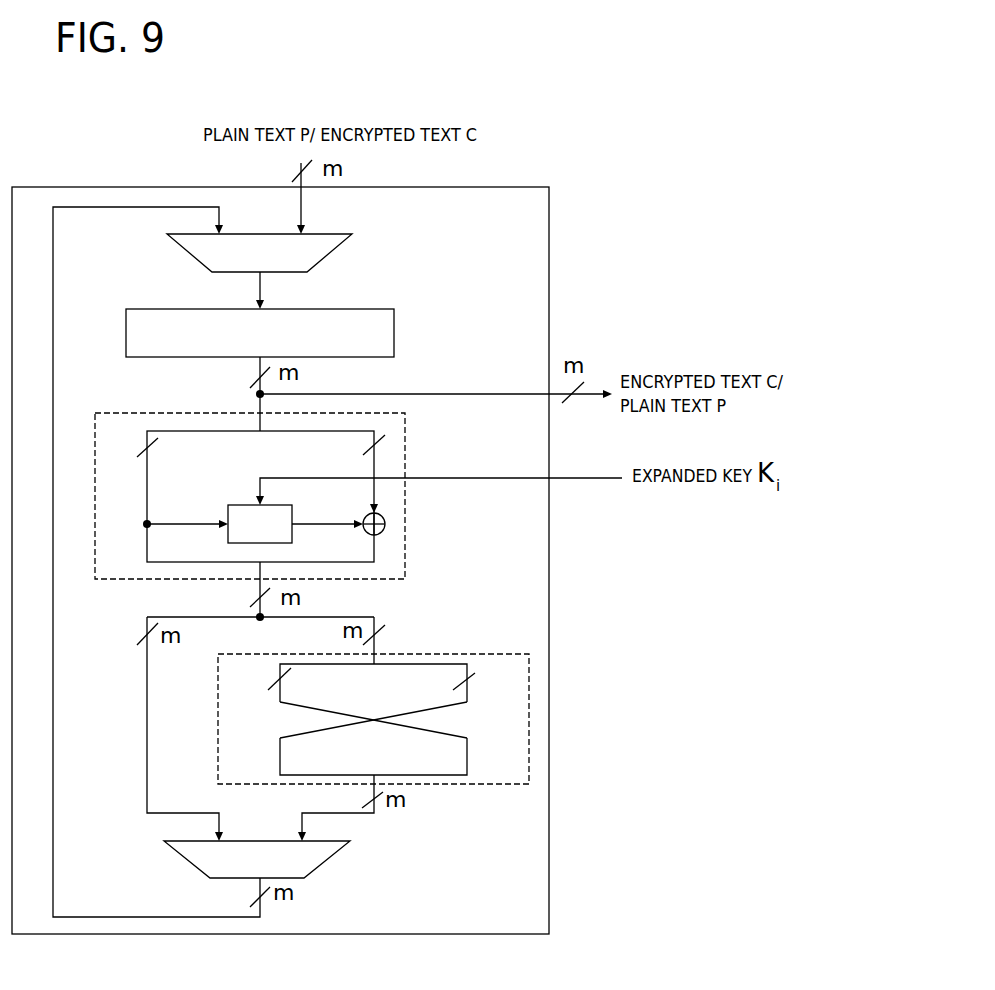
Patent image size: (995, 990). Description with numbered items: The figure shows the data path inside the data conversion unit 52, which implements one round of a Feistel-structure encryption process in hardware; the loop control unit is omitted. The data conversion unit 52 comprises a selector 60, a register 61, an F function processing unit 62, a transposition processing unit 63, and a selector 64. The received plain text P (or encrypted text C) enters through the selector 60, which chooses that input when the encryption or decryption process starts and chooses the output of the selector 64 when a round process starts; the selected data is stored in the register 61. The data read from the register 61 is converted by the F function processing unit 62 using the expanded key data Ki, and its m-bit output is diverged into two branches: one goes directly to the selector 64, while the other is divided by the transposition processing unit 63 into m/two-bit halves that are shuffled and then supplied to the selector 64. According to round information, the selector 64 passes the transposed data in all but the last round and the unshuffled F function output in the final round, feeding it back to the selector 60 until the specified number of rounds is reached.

The data conversion unit 52 is at (549, 271).
The selector 60 is at (330, 250).
The register 61 is at (394, 337).
The F function processing unit 62 is at (405, 553).
The transposition processing unit 63 is at (528, 738).
The selector 64 is at (322, 869).